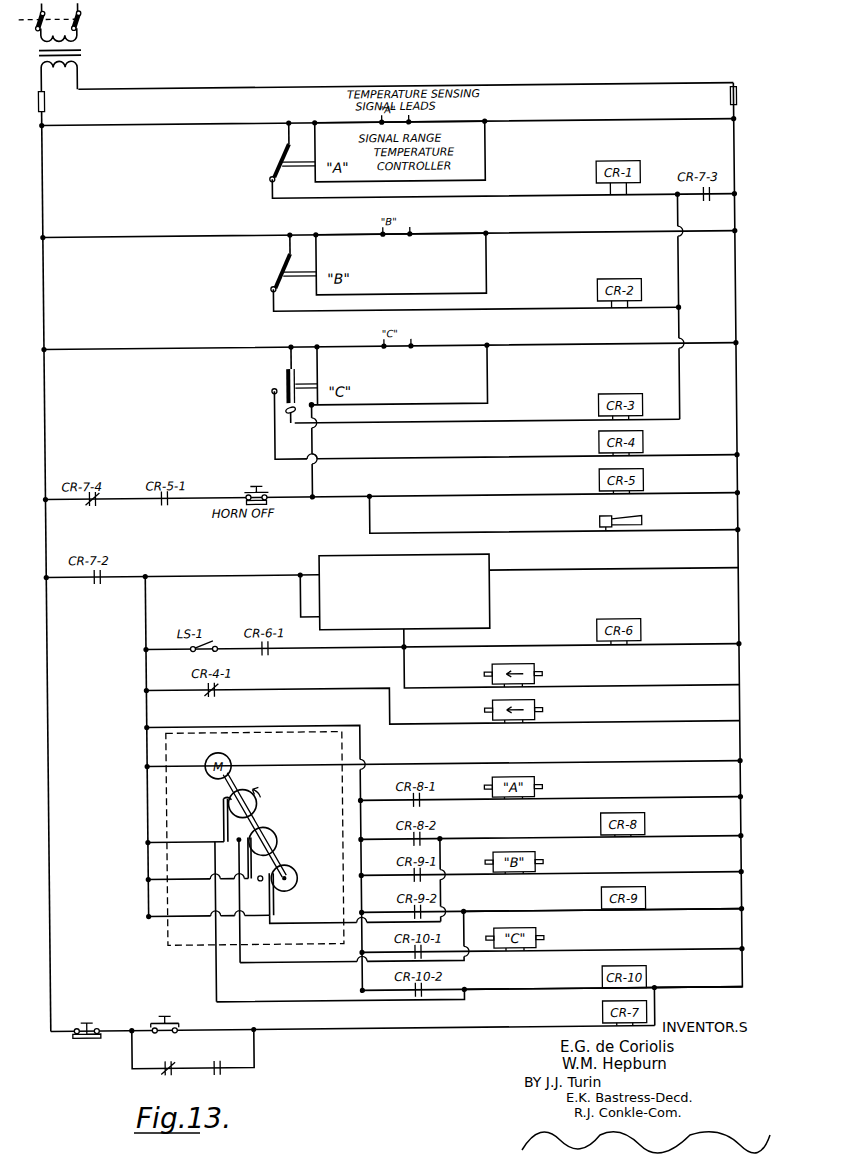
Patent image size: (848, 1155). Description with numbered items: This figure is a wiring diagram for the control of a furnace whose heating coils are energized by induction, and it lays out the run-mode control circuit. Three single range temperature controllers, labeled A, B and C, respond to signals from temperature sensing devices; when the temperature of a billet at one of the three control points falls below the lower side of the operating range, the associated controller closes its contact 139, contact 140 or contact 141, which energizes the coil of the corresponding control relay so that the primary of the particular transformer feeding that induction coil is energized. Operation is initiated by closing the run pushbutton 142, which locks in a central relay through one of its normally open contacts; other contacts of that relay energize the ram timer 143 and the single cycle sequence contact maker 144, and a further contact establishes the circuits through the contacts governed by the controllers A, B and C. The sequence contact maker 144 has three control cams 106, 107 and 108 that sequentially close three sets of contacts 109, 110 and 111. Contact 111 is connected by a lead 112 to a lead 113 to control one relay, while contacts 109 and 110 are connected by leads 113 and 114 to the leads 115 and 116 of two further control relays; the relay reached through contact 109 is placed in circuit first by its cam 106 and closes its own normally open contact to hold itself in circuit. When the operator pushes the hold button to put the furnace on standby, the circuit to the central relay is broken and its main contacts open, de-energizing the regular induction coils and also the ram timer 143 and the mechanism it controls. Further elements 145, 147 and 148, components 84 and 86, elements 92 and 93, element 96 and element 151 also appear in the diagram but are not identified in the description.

The contact 139 is at (262, 181).
The contact 140 is at (265, 290).
The bimetal temperature switch C 145 is at (270, 388).
The contact of switch C 147 is at (316, 406).
The contact 141 is at (289, 414).
The horn 148 is at (646, 524).
The ram timer 143 is at (492, 564).
The single cycle sequence contact maker 144 is at (354, 760).
The control cam 106 is at (256, 805).
The control cam 107 is at (273, 838).
The control cam 108 is at (288, 872).
The contacts 109 is at (216, 800).
The contacts 110 is at (234, 840).
The contacts 111 is at (255, 880).
The lead 112 is at (312, 922).
The lead 113 is at (540, 826).
The lead 114 is at (296, 952).
The lead 115 is at (512, 993).
The lead 116 is at (566, 894).
The solenoid valve 86 is at (541, 678).
The solenoid valve 84 is at (541, 714).
The supply conductor 93 is at (740, 898).
The supply conductor 92 is at (48, 990).
The run pushbutton 142 is at (181, 1014).
The stop push button 151 is at (61, 1045).
The holding circuit 96 is at (256, 1060).